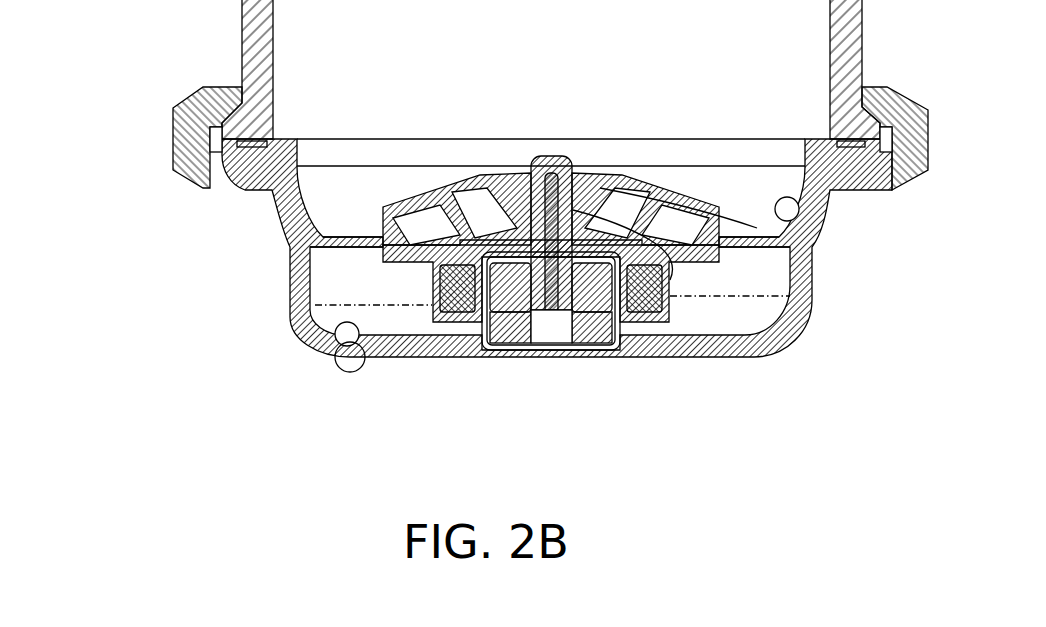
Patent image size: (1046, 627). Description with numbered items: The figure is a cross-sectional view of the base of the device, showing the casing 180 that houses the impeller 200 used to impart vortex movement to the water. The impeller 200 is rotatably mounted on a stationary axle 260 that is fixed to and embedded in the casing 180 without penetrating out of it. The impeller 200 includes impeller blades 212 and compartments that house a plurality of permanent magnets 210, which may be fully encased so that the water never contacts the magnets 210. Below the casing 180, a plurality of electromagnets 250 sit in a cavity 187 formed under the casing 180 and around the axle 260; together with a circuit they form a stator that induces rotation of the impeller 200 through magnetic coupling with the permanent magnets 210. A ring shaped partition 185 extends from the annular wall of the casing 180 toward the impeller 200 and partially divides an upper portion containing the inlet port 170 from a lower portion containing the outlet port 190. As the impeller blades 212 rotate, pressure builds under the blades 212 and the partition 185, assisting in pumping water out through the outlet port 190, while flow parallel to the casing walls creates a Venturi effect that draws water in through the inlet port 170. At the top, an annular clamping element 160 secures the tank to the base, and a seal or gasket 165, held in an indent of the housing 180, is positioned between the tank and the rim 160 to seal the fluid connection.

The annular clamping element 160 is at (173, 133).
The seal or gasket 165 is at (212, 180).
The inlet port 170 is at (803, 213).
The casing 180 is at (305, 298).
The ring shaped partition 185 is at (290, 245).
The cavity 187 is at (592, 346).
The outlet port 190 is at (320, 358).
The impeller 200 is at (438, 156).
The permanent magnets 210 is at (455, 297).
The impeller blades 212 is at (757, 228).
The electromagnets 250 is at (547, 328).
The stationary axle 260 is at (573, 205).